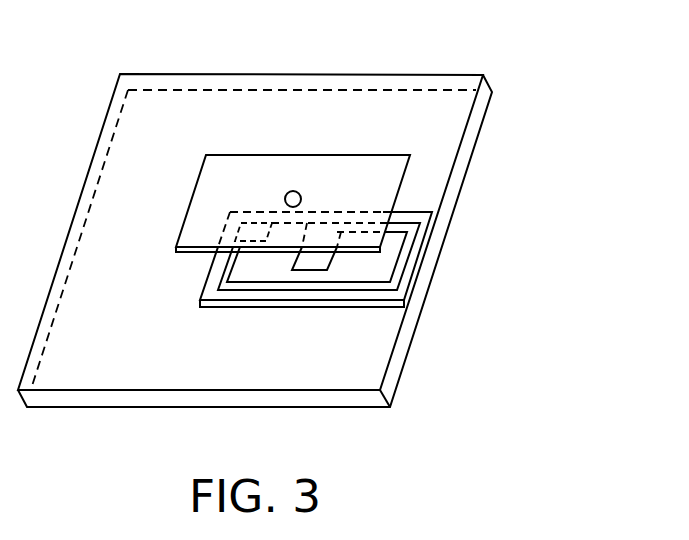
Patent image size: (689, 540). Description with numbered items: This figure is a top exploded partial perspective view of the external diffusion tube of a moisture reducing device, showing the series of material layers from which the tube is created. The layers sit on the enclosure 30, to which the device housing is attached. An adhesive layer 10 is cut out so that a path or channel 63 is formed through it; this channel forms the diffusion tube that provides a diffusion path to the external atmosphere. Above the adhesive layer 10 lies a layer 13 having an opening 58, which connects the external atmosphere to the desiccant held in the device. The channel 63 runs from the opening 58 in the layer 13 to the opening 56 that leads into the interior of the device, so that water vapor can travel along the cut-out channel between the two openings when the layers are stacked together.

The enclosure 30 is at (485, 122).
The adhesive layer 10 is at (383, 260).
The path or channel 63 is at (320, 288).
The opening into the interior of the device 56 is at (270, 230).
The layer 13 is at (347, 173).
The opening 58 is at (293, 191).